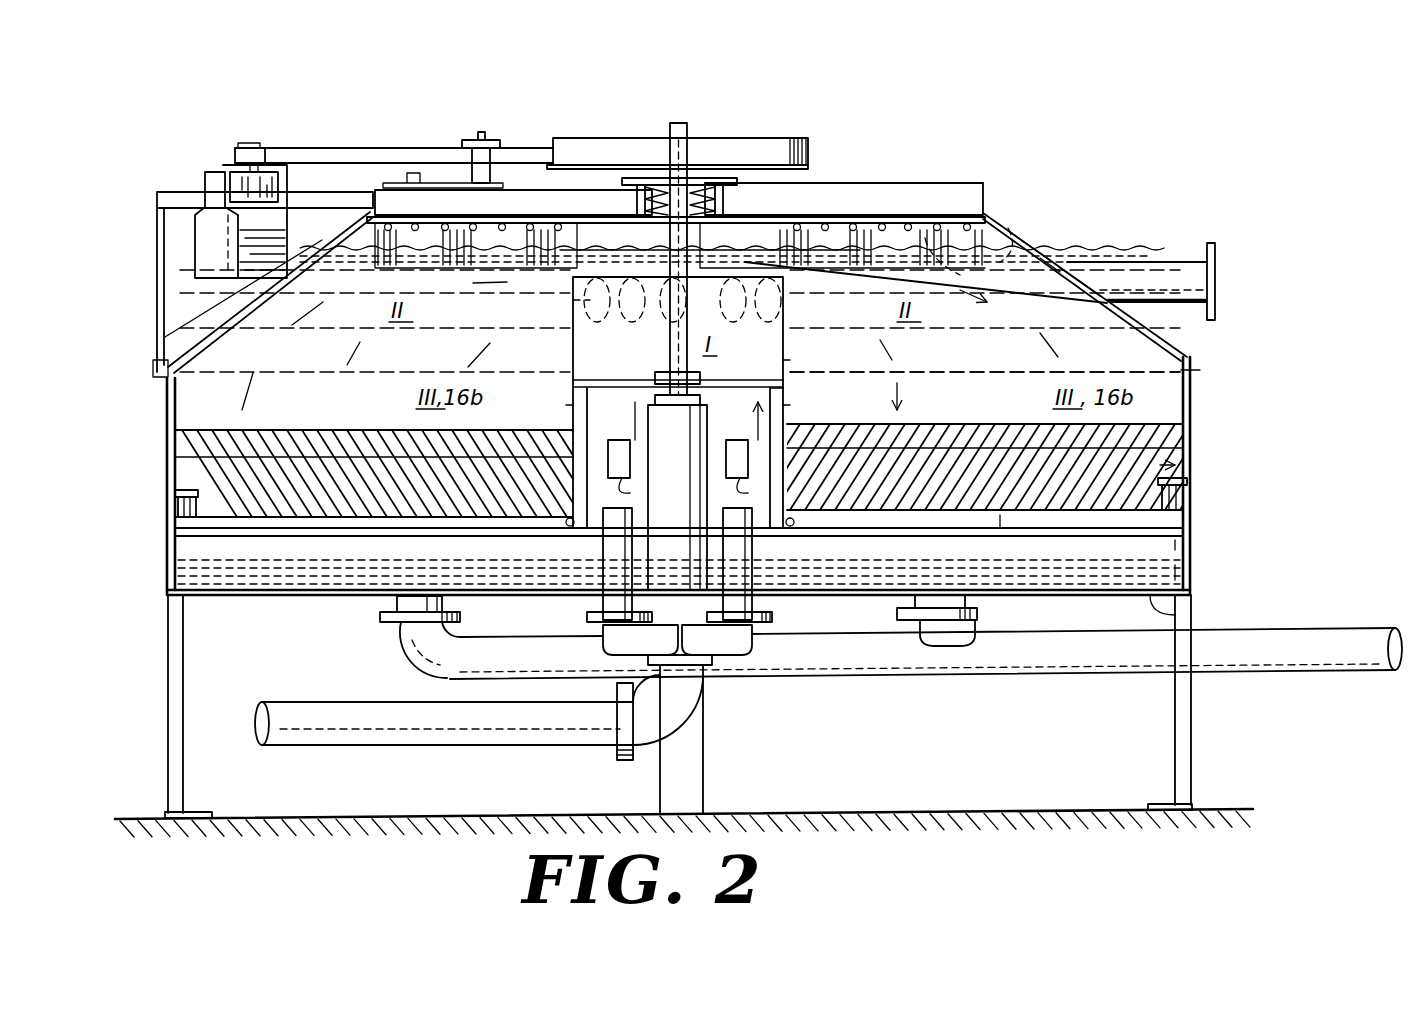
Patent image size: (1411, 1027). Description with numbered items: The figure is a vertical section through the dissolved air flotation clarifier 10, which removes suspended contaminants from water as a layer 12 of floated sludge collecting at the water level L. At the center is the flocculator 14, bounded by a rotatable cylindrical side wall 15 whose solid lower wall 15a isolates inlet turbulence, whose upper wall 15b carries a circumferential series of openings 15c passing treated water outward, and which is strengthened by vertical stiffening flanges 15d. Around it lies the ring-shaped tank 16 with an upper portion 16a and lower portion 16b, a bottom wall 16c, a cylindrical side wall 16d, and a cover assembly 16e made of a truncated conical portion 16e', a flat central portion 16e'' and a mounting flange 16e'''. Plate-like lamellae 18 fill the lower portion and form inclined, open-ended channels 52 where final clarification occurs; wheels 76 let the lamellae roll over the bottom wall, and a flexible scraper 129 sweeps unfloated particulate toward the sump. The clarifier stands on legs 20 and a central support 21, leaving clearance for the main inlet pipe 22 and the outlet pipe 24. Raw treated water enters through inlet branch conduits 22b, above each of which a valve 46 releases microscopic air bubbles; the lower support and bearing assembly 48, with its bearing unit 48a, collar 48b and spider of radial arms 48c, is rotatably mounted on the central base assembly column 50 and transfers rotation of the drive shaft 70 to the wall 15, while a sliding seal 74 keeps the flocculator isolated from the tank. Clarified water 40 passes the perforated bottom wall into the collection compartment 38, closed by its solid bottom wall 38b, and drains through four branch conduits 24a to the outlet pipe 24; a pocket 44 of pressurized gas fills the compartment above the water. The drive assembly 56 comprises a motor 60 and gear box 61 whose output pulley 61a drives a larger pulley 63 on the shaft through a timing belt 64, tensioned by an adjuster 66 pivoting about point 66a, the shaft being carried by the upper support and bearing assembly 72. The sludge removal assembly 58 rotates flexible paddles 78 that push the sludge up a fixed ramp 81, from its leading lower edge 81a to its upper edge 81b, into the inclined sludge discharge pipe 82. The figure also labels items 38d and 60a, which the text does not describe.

The clarifier 10 is at (958, 132).
The layer of floated sludge 12 is at (486, 240).
The central flocculator 14 is at (752, 320).
The rotatable cylindrical side wall 15 is at (570, 350).
The flocculator side wall below the support assembly 15a is at (785, 415).
The upper flocculator side wall 15b is at (790, 360).
The openings 15c is at (590, 300).
The vertical stiffening flanges 15d is at (572, 405).
The tank 16 is at (1200, 357).
The upper portion of tank 16a is at (985, 351).
The lower portion of tank 16b is at (1190, 462).
The bottom wall 16c is at (1180, 545).
The cylindrical side wall 16d is at (1192, 503).
The cover assembly 16e is at (1048, 227).
The truncated conical portion 16e' is at (1097, 260).
The flat central portion 16e'' is at (796, 182).
The mounting flange 16e''' is at (921, 164).
The lamellae 18 is at (1180, 408).
The legs 20 is at (185, 665).
The central support 21 is at (705, 730).
The main inlet pipe 22 is at (378, 700).
The inlet branch conduits 22b is at (600, 540).
The outlet pipe 24 is at (1255, 628).
The branch conduits 24a is at (455, 603).
The clarified collection compartment 38 is at (165, 522).
The bottom wall of compartment 38b is at (1175, 605).
The bottom wall portion 38d is at (1190, 570).
The clarified water 40 is at (178, 580).
The layer of pressurized gas 44 is at (197, 550).
The valves 46 is at (615, 440).
The lower support and bearing assembly 48 is at (740, 378).
The bearing unit 48a is at (785, 385).
The collar 48b is at (620, 372).
The spider of radial arms 48c is at (580, 380).
The central base assembly column 50 is at (684, 482).
The channels 52 is at (352, 445).
The drive assembly 56 is at (187, 174).
The sludge removal assembly 58 is at (1045, 255).
The motor 60 is at (198, 160).
The motor pulley 60a is at (267, 148).
The driven gear box 61 is at (280, 180).
The output pulley 61a is at (247, 143).
The pulley 63 is at (703, 138).
The timing belt 64 is at (364, 150).
The tension adjuster 66 is at (481, 132).
The pivot point 66a is at (412, 174).
The drive shaft 70 is at (676, 123).
The upper support and bearing assembly 72 is at (640, 172).
The sliding seal 74 is at (535, 530).
The wheels 76 is at (1190, 515).
The flexible paddles 78 is at (358, 233).
The fixed ramp 81 is at (1008, 228).
The leading lower edge 81a is at (926, 292).
The following upper edge 81b is at (925, 238).
The sludge discharge pipe 82 is at (1143, 262).
The flexible scraper 129 is at (1000, 520).
The water level L is at (712, 250).